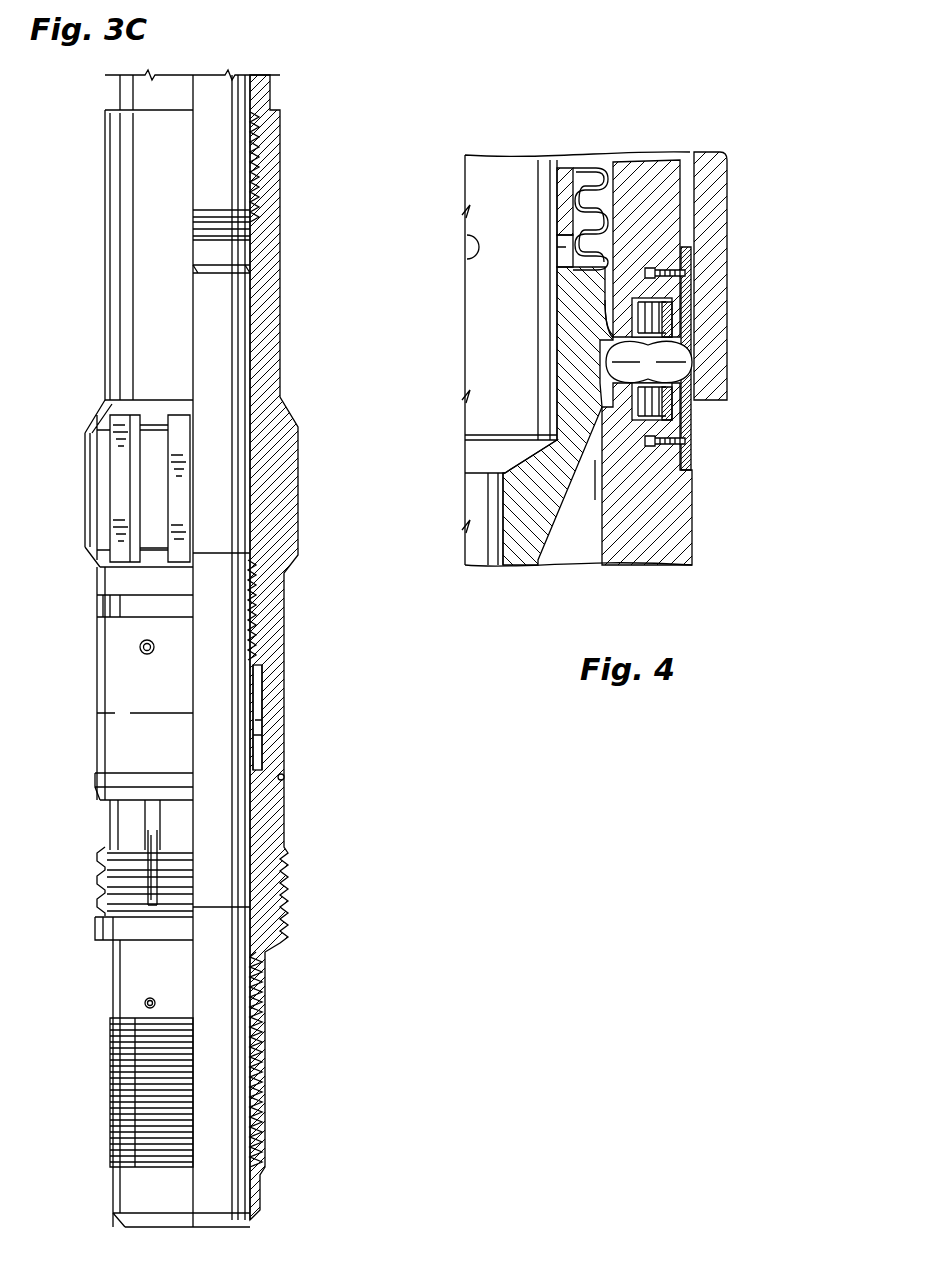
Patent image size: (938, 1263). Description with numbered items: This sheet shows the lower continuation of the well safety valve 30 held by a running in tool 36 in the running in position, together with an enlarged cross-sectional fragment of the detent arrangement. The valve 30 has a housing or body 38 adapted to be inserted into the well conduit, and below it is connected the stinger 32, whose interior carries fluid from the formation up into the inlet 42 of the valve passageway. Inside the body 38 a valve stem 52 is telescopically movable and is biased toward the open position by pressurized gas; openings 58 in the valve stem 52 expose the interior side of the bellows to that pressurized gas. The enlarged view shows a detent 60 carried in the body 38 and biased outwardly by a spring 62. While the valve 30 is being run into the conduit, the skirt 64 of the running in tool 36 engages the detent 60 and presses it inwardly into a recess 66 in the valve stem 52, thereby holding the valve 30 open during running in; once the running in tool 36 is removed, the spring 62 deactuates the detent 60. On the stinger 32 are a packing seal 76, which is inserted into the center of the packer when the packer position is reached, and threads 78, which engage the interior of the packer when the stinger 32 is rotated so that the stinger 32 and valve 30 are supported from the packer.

In FIG. 4, the valve 30 is at (700, 541).
In FIG. 3C, the stinger 32 is at (285, 395).
In FIG. 4, the running in tool 36 is at (732, 172).
In FIG. 4, the housing or body 38 is at (692, 513).
In FIG. 3C, the inlet 42 is at (232, 150).
In FIG. 4, the valve stem 52 is at (577, 303).
In FIG. 4, the openings 58 is at (560, 247).
In FIG. 4, the detent 60 is at (690, 343).
In FIG. 4, the spring 62 is at (668, 313).
In FIG. 4, the skirt 64 is at (612, 212).
In FIG. 4, the recess 66 is at (613, 365).
In FIG. 3C, the packing seal 76 is at (268, 1060).
In FIG. 3C, the threads 78 is at (283, 873).